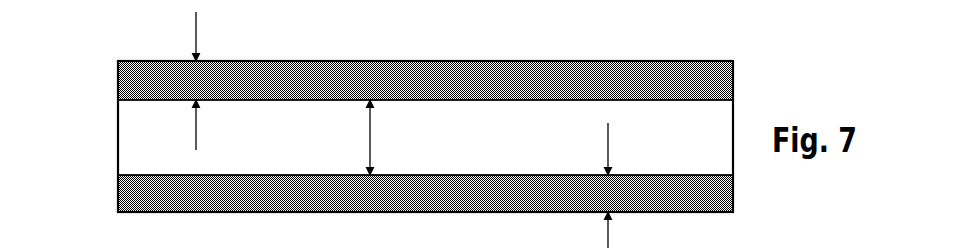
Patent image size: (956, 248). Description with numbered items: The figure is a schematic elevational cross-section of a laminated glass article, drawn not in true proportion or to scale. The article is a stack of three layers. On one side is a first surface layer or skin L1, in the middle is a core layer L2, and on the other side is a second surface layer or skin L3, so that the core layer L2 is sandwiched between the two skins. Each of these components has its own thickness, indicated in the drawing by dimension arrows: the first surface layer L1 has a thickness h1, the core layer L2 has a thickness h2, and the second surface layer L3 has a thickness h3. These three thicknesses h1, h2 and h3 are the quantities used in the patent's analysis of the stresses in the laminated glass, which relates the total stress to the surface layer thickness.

The first surface layer L1 is at (132, 77).
The core layer L2 is at (132, 136).
The second surface layer L3 is at (130, 192).
The thickness of first surface layer h1 is at (220, 81).
The thickness of core layer h2 is at (397, 137).
The thickness of second surface layer h3 is at (632, 185).